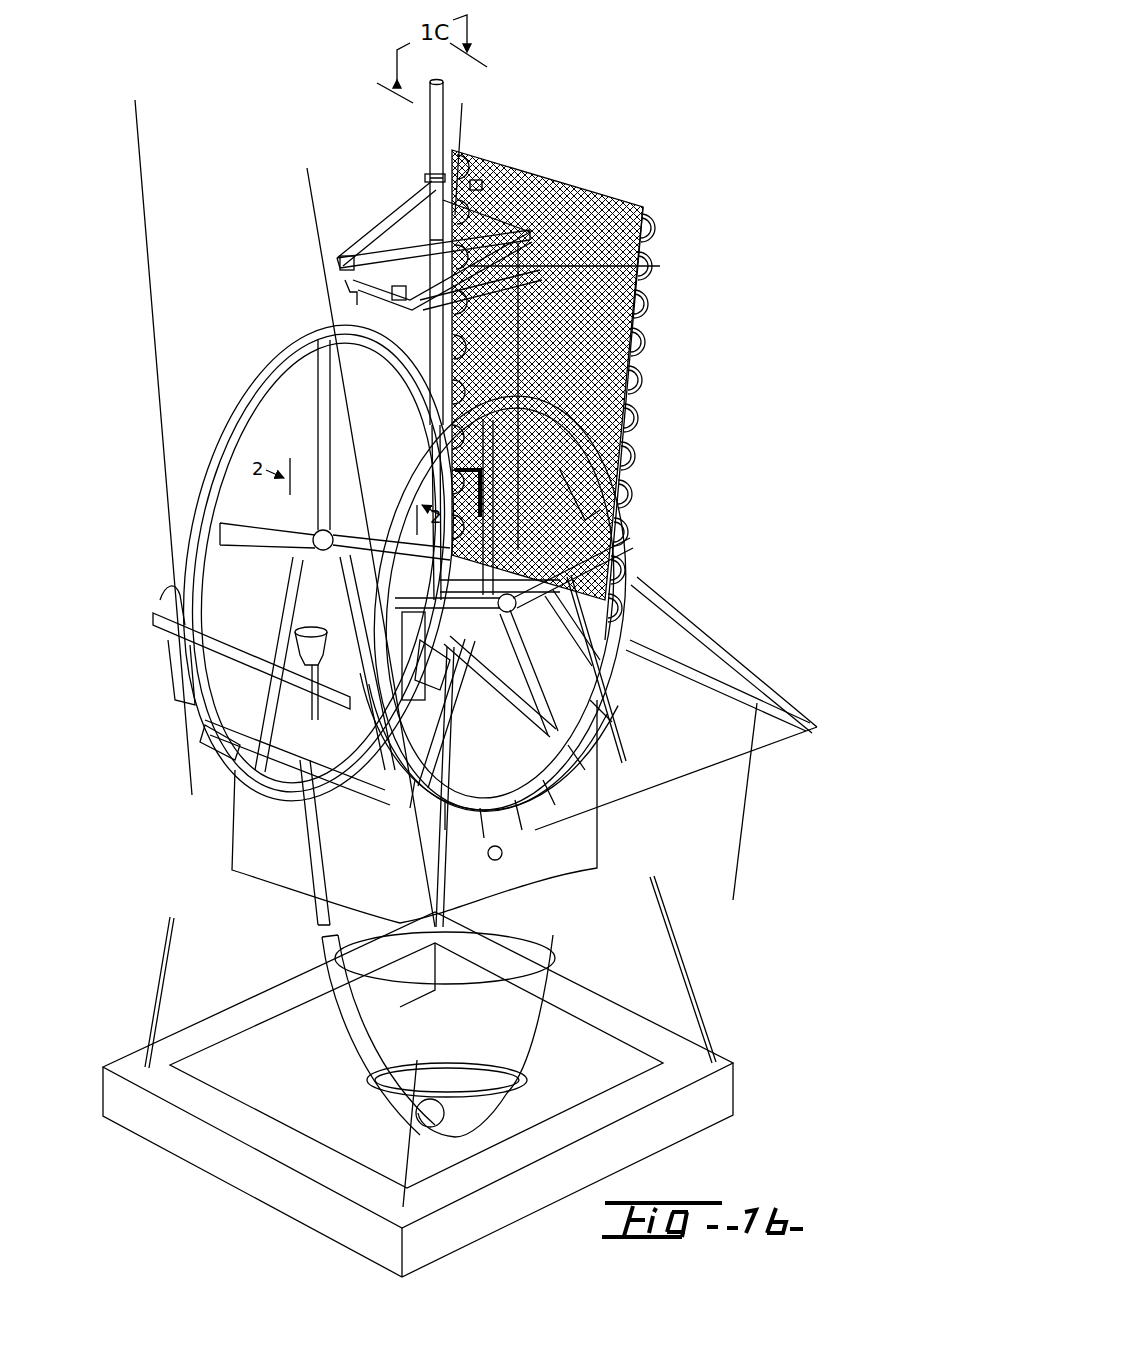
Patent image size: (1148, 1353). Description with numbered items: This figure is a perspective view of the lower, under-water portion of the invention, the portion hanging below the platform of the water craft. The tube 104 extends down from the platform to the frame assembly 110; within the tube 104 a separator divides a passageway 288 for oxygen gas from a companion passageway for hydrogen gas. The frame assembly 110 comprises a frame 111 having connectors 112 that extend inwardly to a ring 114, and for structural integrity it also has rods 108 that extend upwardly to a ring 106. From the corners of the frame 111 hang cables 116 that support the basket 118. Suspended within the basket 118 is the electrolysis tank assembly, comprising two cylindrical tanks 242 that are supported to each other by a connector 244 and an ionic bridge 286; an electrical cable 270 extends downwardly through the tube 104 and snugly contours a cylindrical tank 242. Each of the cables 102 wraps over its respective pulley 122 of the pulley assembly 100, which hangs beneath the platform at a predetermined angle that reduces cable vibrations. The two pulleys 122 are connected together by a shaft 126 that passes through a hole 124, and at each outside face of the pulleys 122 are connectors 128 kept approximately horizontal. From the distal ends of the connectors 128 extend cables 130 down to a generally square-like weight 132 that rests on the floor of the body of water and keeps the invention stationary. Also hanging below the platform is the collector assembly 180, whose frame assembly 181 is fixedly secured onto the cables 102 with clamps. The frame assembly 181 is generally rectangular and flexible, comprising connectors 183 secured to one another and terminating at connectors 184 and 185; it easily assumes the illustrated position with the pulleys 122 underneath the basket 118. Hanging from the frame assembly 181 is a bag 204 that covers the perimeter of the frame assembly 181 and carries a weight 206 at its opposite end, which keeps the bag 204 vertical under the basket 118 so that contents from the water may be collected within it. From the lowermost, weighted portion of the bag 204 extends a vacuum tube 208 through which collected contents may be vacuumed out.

The pulley assembly 100 is at (162, 472).
The cables 102 is at (150, 180).
The tube 104 is at (428, 133).
The ring 106 is at (430, 177).
The rods 108 is at (400, 190).
The frame assembly 110 is at (377, 293).
The frame 111 is at (643, 242).
The connectors 112 is at (383, 250).
The ring 114 is at (523, 250).
The cables 116 is at (440, 330).
The basket 118 is at (600, 510).
The pulleys 122 is at (597, 460).
The hole 124 is at (557, 620).
The shaft 126 is at (560, 580).
The connectors 128 is at (553, 590).
The cables 130 is at (620, 750).
The weight 132 is at (577, 1177).
The collector assembly 180 is at (726, 378).
The frame assembly 181 is at (180, 690).
The connectors 183 is at (227, 757).
The connector 184 is at (160, 625).
The connector 185 is at (637, 580).
The bag 204 is at (230, 832).
The weight 206 is at (490, 1121).
The vacuum tube 208 is at (305, 808).
The cylindrical tanks 242 is at (470, 517).
The connector 244 is at (560, 560).
The electrical cable 270 is at (660, 266).
The ionic bridge 286 is at (437, 667).
The passageway 288 is at (480, 517).